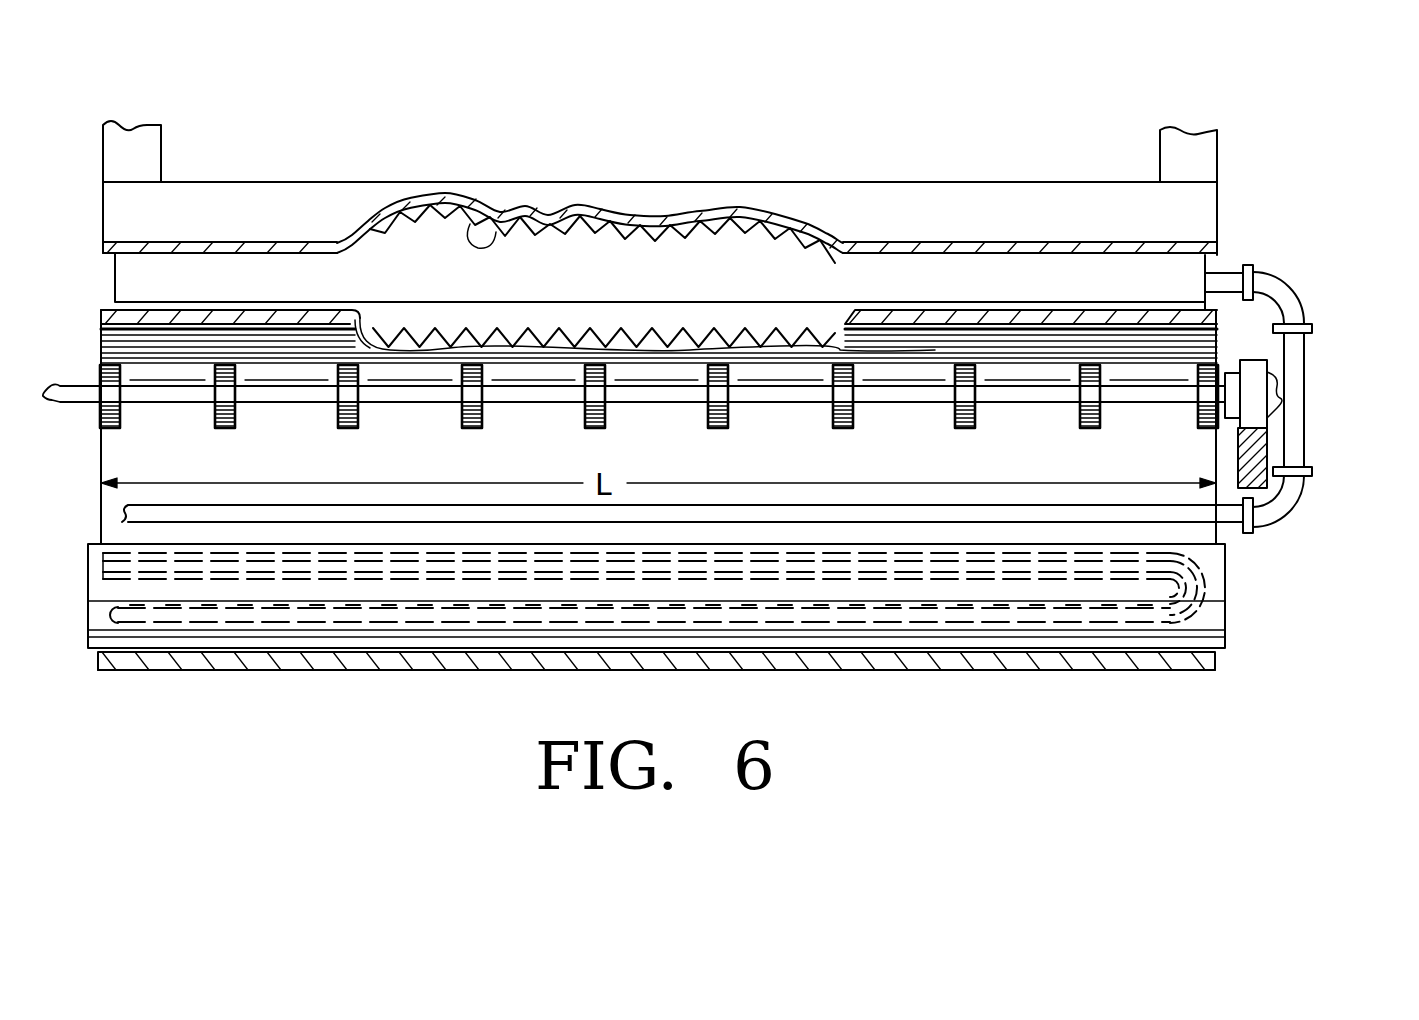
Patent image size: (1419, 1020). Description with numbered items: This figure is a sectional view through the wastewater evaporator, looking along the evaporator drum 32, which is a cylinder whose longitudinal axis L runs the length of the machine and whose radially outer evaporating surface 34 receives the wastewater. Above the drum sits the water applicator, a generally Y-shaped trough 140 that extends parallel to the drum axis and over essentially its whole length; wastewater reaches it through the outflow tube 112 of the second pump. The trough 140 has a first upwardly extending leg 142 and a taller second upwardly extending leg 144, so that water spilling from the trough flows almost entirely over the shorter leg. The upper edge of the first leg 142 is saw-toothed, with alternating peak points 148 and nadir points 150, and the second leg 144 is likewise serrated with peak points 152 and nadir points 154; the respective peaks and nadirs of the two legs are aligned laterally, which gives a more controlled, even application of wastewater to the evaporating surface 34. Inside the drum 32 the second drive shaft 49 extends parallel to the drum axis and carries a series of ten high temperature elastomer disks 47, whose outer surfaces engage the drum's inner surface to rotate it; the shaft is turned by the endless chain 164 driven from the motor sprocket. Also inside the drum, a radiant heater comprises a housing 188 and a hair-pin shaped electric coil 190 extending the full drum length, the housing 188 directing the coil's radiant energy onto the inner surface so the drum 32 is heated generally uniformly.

The evaporator drum 32 is at (102, 310).
The radially outer evaporating surface 34 is at (1102, 672).
The elastomer disks 47 is at (217, 425).
The second drive shaft 49 is at (865, 403).
The outflow tube 112 is at (1285, 292).
The trough 140 is at (772, 282).
The first upwardly extending leg 142 is at (487, 243).
The second upwardly extending leg 144 is at (657, 313).
The peak points 148 is at (400, 230).
The nadir points 150 is at (440, 237).
The peak points 152 is at (403, 340).
The nadir points 154 is at (403, 340).
The endless chain 164 is at (1260, 447).
The housing 188 is at (1223, 630).
The coil 190 is at (1197, 568).